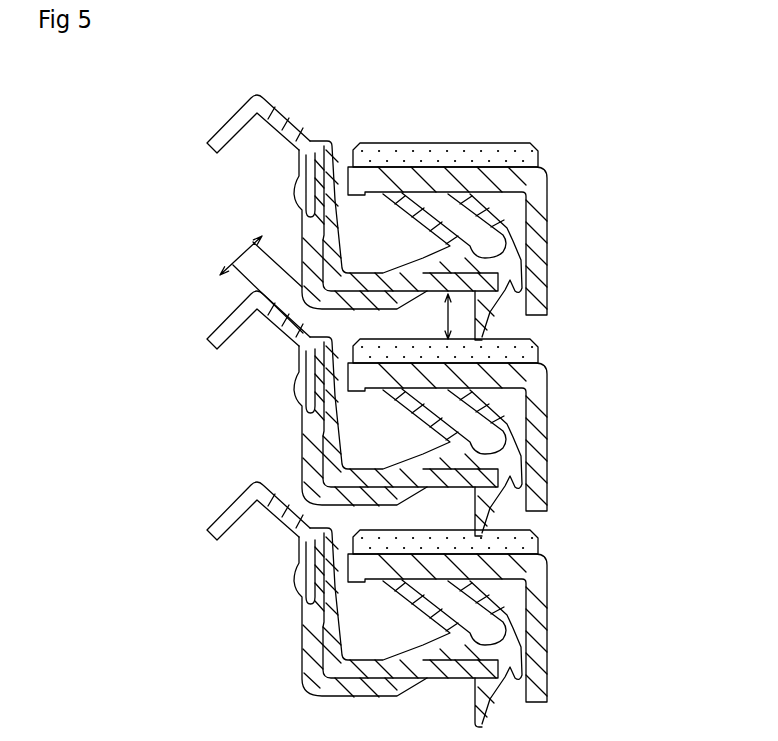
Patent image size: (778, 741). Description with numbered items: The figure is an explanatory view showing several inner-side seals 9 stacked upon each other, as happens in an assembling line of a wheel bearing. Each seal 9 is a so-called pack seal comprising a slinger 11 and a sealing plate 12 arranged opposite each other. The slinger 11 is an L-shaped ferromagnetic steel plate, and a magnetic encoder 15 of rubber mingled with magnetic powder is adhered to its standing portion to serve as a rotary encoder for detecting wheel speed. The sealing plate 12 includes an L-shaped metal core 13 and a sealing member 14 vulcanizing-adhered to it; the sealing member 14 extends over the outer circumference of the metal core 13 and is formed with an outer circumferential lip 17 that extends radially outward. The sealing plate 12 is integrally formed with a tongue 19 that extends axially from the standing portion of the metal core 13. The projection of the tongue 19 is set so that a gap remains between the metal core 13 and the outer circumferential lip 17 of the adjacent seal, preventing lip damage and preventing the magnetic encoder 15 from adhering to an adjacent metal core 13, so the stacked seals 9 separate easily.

The inner-side seal 9 is at (585, 188).
The slinger 11 is at (538, 607).
The sealing plate 12 is at (299, 706).
The metal core 13 is at (312, 228).
The sealing member 14 is at (497, 655).
The magnetic encoder 15 is at (492, 545).
The outer circumferential lip 17 is at (283, 126).
The tongue 19 is at (482, 716).